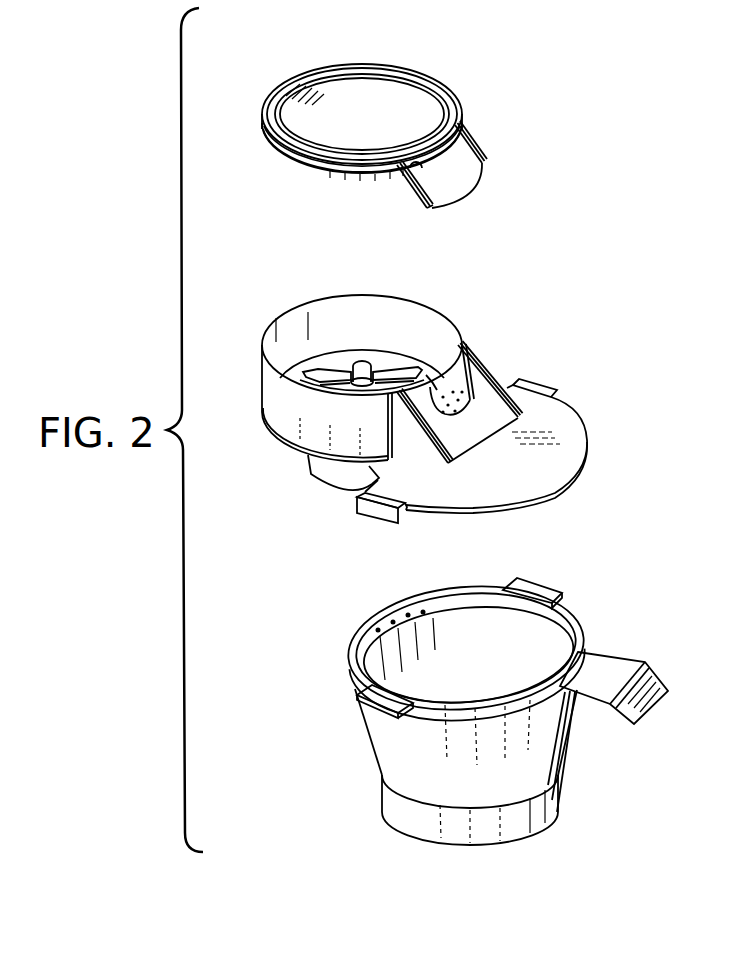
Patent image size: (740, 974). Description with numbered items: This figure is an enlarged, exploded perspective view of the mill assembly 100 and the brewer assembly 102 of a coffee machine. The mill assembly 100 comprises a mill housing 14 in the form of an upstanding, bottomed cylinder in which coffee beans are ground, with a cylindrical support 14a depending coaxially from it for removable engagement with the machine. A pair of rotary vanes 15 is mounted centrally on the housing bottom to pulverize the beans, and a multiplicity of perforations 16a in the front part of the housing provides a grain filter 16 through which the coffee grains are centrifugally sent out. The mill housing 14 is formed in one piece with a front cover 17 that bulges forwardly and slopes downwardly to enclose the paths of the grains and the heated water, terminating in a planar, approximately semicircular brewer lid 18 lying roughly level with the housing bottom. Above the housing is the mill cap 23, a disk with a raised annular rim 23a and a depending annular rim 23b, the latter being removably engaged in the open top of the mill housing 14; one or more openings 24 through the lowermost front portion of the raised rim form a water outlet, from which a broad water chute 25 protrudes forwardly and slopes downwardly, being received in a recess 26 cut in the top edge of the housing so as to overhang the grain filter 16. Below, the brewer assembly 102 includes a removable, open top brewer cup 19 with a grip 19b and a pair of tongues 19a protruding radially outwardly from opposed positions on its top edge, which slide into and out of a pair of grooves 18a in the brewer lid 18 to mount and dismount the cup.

The mill assembly 100 is at (284, 308).
The brewer assembly 102 is at (338, 657).
The mill housing 14 is at (282, 418).
The cylindrical support 14a is at (328, 478).
The rotary vanes 15 is at (334, 373).
The grain filter 16 is at (459, 399).
The perforations 16a is at (456, 385).
The front cover 17 is at (473, 443).
The brewer lid 18 is at (586, 443).
The grooves 18a is at (556, 398).
The brewer cup 19 is at (546, 753).
The tongues 19a is at (552, 589).
The grip 19b is at (627, 667).
The mill cap 23 is at (377, 94).
The raised annular rim 23a is at (299, 78).
The depending annular rim 23b is at (320, 172).
The openings 24 is at (408, 189).
The water chute 25 is at (478, 163).
The recess 26 is at (433, 383).